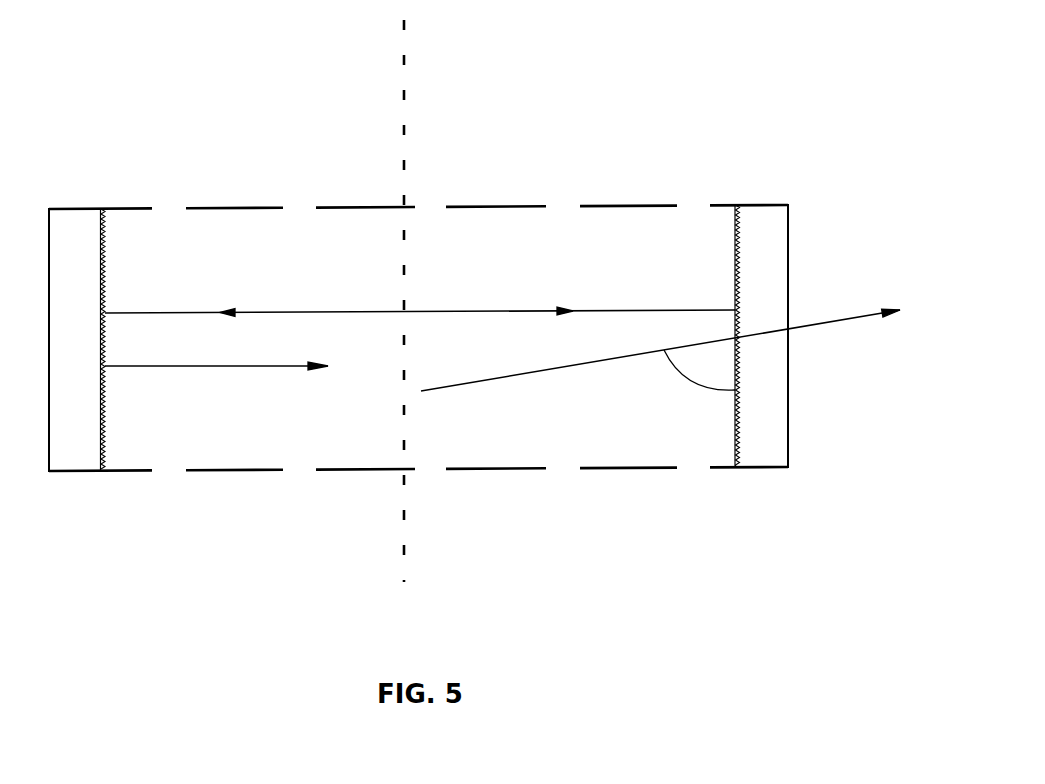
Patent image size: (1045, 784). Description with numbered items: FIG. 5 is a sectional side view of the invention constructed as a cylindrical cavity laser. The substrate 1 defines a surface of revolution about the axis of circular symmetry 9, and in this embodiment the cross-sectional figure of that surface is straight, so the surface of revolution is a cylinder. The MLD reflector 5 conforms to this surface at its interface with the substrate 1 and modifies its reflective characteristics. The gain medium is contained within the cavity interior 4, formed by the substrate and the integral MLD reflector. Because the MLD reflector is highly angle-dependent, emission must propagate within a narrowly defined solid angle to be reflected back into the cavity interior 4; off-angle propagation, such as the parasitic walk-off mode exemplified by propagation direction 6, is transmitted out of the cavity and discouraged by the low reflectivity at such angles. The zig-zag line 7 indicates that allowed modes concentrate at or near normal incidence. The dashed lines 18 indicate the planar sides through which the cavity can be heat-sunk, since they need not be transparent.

The substrate 1 is at (774, 240).
The cavity interior 4 is at (418, 242).
The MLD reflector 5 is at (758, 419).
The propagation direction 6 is at (571, 380).
The zig-zag line 7 is at (280, 300).
The axis of circular symmetry 9 is at (388, 94).
The dashed lines 18 is at (610, 480).